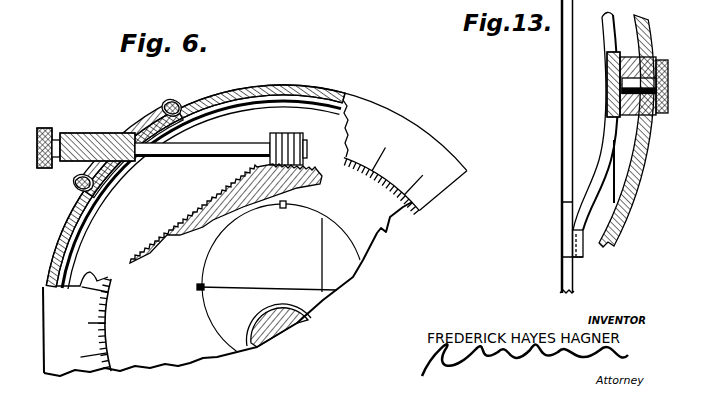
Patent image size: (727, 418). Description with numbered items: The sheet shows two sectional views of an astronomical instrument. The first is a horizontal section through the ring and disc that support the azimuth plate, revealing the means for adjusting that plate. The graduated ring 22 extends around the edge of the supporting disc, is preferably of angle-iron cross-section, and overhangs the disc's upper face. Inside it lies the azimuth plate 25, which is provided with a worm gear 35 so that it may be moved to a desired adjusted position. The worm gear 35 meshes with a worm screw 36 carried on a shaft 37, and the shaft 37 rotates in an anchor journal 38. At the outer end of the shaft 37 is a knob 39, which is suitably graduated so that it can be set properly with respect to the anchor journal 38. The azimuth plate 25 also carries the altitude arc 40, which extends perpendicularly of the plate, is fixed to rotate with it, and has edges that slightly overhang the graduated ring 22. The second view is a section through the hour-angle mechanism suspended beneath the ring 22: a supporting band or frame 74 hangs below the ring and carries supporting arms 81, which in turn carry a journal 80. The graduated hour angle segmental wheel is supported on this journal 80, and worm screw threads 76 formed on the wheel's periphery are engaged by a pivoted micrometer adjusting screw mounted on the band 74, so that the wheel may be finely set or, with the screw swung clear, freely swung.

In FIG. 6, the graduated ring 22 is at (427, 147).
In FIG. 6, the azimuth plate 25 is at (373, 233).
In FIG. 6, the worm gear 35 is at (194, 200).
In FIG. 6, the worm screw 36 is at (293, 135).
In FIG. 6, the shaft 37 is at (212, 145).
In FIG. 6, the anchor journal 38 is at (83, 131).
In FIG. 6, the knob 39 is at (47, 128).
In FIG. 6, the altitude arc 40 is at (330, 122).
In FIG. 13, the supporting band or frame 74 is at (561, 187).
In FIG. 13, the worm screw threads 76 is at (632, 182).
In FIG. 13, the journal 80 is at (647, 60).
In FIG. 13, the supporting arms 81 is at (607, 150).